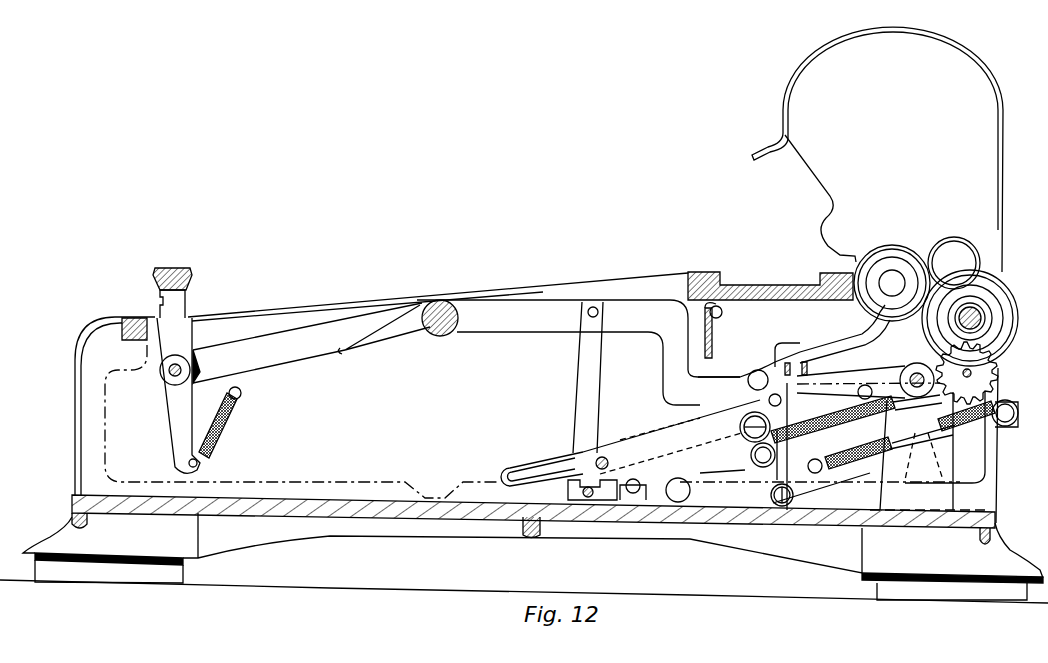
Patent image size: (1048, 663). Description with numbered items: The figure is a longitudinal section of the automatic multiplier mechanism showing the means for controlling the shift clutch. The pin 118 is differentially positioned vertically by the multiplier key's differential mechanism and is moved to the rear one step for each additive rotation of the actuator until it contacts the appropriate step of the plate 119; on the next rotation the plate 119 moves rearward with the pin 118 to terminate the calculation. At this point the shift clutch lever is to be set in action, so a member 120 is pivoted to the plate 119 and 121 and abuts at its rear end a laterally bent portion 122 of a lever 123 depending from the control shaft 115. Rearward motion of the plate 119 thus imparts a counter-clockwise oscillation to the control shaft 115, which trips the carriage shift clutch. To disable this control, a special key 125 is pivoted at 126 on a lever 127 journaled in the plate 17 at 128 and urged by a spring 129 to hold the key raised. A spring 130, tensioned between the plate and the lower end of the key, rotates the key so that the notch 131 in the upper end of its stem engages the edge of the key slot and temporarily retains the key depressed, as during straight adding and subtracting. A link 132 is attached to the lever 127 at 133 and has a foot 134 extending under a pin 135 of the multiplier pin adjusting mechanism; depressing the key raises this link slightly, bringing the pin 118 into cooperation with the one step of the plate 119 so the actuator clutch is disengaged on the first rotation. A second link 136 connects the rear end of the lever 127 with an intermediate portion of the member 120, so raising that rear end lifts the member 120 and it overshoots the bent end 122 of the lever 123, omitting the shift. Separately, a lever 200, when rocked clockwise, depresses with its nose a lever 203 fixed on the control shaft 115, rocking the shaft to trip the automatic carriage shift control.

The plate 17 is at (417, 423).
The notch 131 is at (160, 300).
The special key 125 is at (180, 348).
The pivot 126 is at (172, 376).
The lever 127 is at (283, 362).
The spring 130 is at (233, 415).
The spring 129 is at (383, 334).
The journal 128 is at (437, 336).
The attachment point 133 is at (598, 310).
The link 132 is at (588, 378).
The pin 135 is at (604, 456).
The foot 134 is at (648, 456).
The pin 118 is at (630, 494).
The pivot 121 is at (681, 503).
The plate 119 is at (738, 402).
The second link 136 is at (883, 434).
The lever 200 is at (823, 372).
The lever 203 is at (870, 378).
The control shaft 115 is at (917, 365).
The lever 123 is at (905, 452).
The laterally bent portion 122 is at (905, 466).
The member 120 is at (828, 491).